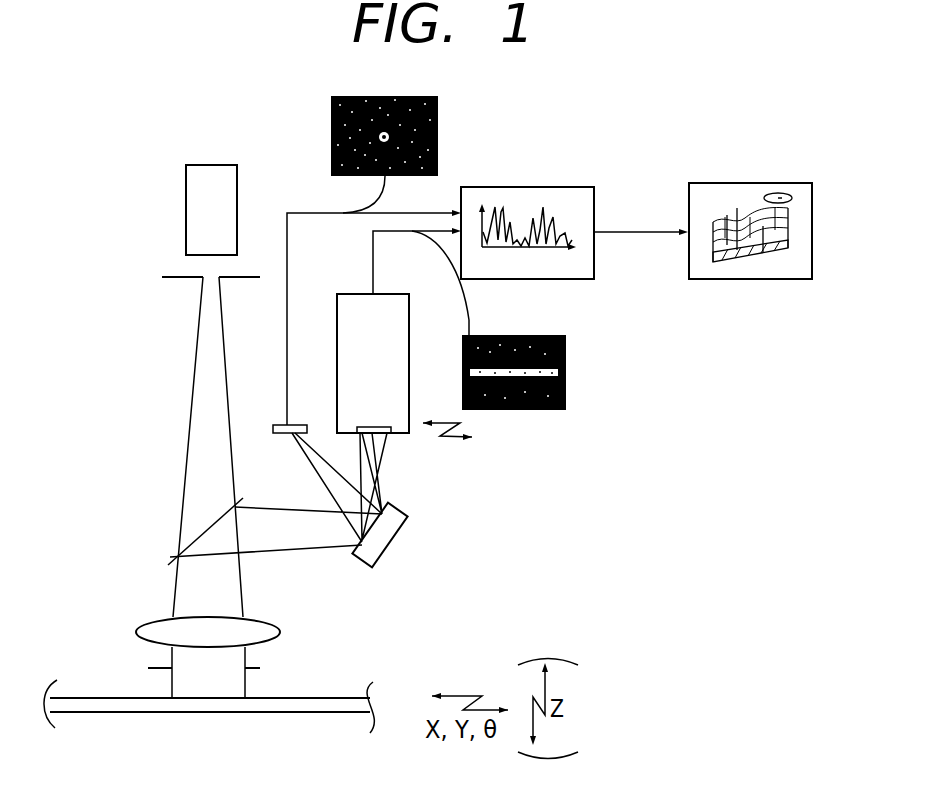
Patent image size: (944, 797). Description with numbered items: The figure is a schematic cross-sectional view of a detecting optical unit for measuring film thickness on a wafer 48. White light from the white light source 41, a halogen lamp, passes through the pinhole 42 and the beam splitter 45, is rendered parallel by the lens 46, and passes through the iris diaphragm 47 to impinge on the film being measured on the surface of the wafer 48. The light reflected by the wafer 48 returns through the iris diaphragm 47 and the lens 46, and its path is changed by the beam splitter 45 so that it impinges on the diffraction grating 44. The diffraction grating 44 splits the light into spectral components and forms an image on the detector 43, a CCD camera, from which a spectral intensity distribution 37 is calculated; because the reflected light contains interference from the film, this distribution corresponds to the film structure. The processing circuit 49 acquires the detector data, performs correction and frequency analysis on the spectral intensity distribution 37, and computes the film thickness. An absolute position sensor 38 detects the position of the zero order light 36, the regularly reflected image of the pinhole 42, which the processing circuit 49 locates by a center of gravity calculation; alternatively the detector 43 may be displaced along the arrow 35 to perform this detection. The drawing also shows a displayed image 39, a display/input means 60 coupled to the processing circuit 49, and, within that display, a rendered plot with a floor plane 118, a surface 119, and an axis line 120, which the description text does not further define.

The arrow 35 is at (458, 446).
The zero order light 36 is at (313, 485).
The spectral intensity distribution 37 is at (566, 362).
The absolute position sensor 38 is at (275, 418).
The displayed image 39 is at (438, 125).
The white light source 41 is at (237, 186).
The pinhole 42 is at (200, 277).
The detector 43 is at (337, 387).
The diffraction grating 44 is at (387, 555).
The beam splitter 45 is at (170, 557).
The lens 46 is at (268, 621).
The iris diaphragm 47 is at (260, 668).
The wafer 48 is at (285, 713).
The processing circuit 49 is at (515, 279).
The display/input means 60 is at (710, 280).
The floor plane 118 is at (775, 257).
The surface 119 is at (712, 222).
The axis line 120 is at (727, 215).